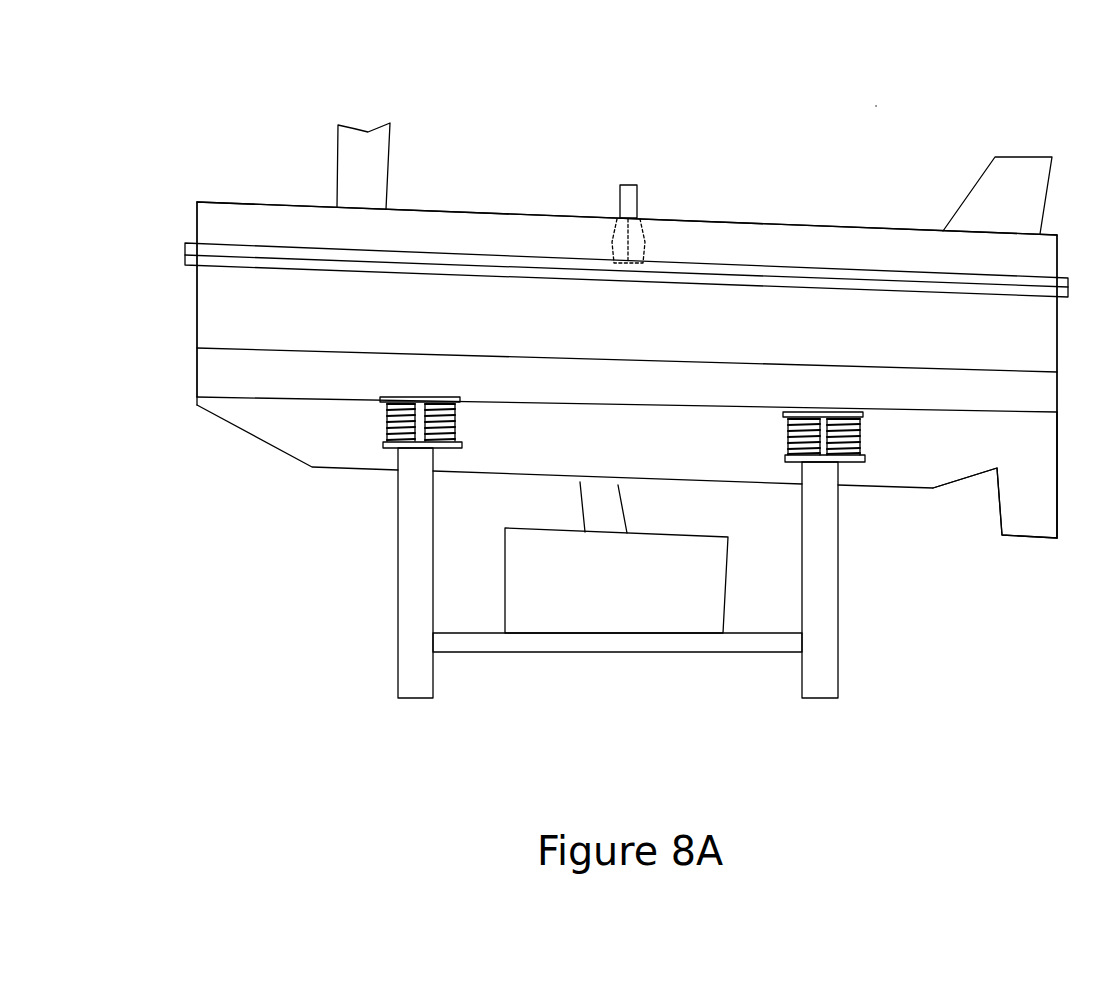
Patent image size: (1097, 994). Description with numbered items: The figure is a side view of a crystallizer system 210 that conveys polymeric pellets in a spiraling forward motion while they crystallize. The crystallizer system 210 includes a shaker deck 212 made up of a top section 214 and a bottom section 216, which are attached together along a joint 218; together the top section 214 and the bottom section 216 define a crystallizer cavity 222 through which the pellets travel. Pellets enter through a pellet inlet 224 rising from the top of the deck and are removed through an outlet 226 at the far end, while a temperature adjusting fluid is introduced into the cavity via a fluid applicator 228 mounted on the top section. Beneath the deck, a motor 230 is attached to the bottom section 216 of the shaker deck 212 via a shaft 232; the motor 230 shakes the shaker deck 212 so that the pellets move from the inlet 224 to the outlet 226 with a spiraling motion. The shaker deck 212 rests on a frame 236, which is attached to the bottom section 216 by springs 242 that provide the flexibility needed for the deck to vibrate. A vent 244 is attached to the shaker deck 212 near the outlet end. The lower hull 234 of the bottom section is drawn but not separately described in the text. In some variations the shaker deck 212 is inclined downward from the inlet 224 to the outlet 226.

The crystallizer system 210 is at (873, 112).
The shaker deck 212 is at (890, 197).
The top section 214 is at (230, 202).
The bottom section 216 is at (212, 300).
The joint 218 is at (185, 255).
The crystallizer cavity 222 is at (318, 305).
The pellet inlet 224 is at (355, 122).
The outlet 226 is at (1025, 512).
The fluid applicator 228 is at (615, 198).
The motor 230 is at (593, 590).
The shaft 232 is at (603, 508).
The lower hull 234 is at (303, 443).
The frame 236 is at (408, 557).
The springs 242 is at (400, 418).
The vent 244 is at (1032, 155).